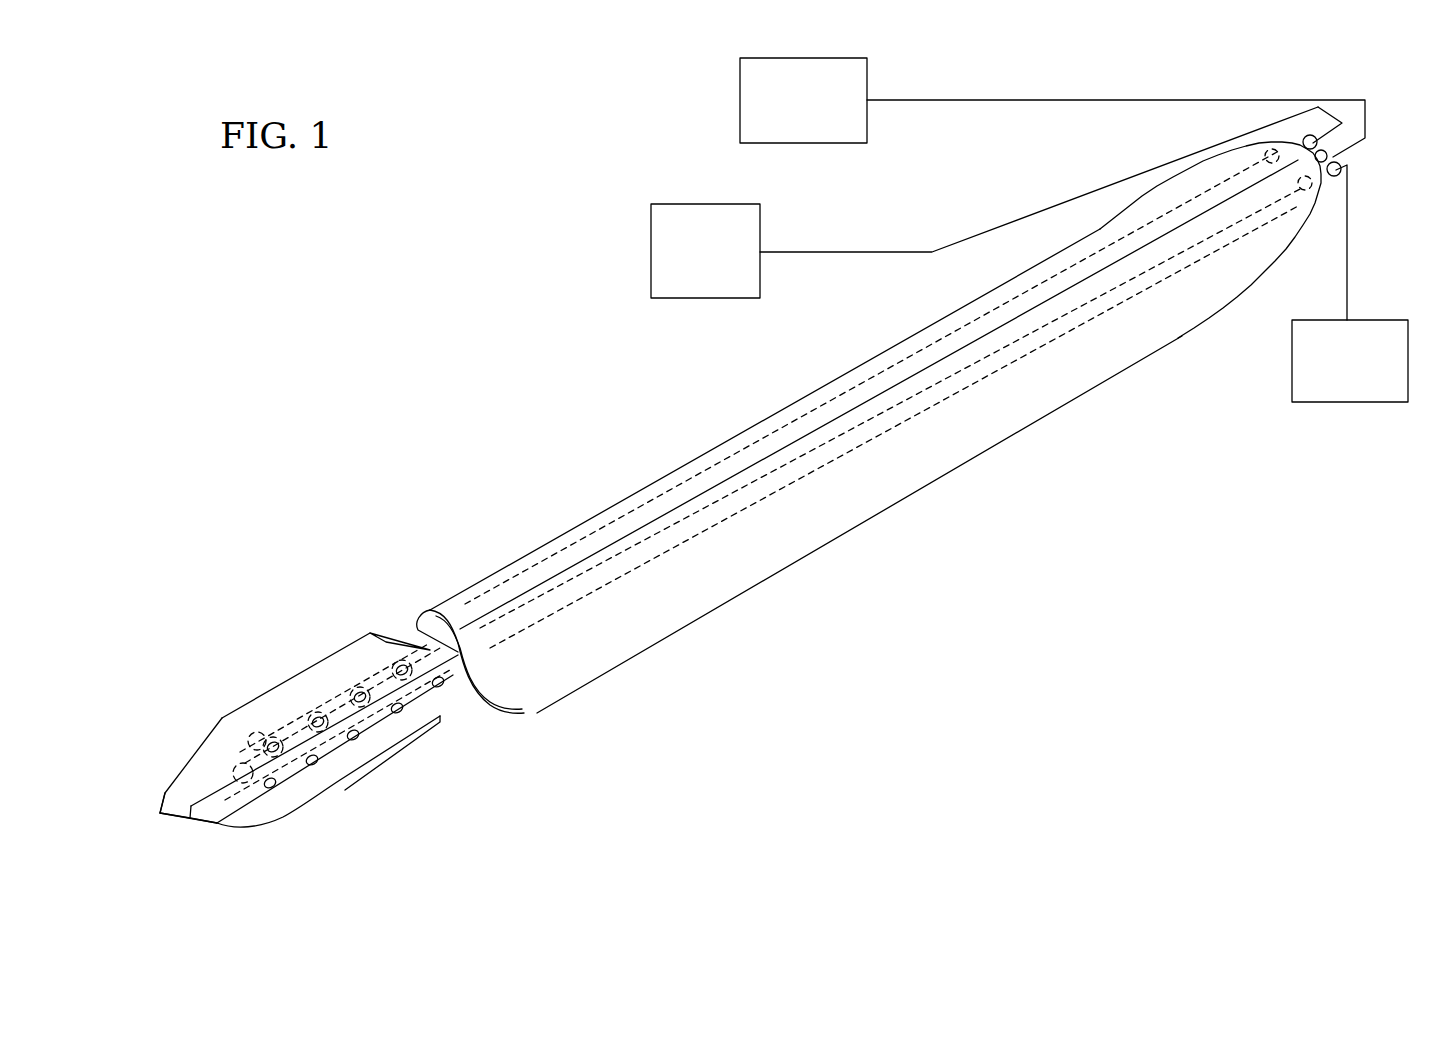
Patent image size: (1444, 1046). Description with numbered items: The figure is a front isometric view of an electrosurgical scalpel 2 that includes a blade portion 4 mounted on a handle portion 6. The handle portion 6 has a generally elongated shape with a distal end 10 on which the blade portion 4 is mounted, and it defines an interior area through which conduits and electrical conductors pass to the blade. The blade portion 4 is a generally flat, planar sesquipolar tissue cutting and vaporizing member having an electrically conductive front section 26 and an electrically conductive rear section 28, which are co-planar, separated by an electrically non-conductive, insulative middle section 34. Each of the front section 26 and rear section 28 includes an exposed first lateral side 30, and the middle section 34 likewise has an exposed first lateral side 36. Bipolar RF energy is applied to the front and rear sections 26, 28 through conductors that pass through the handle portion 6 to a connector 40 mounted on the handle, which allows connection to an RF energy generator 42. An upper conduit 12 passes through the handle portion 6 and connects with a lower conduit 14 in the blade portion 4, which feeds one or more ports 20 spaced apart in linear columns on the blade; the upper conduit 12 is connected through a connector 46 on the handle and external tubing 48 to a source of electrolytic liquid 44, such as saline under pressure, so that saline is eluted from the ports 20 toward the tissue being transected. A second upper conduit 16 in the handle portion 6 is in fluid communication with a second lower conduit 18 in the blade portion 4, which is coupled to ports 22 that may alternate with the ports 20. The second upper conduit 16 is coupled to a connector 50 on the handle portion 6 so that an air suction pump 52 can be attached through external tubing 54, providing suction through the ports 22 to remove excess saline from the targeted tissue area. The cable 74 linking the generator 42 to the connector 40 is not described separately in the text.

The electrosurgical scalpel 2 is at (1112, 695).
The blade portion 4 is at (222, 580).
The handle portion 6 is at (790, 406).
The distal end 10 is at (525, 733).
The upper conduit 12 is at (737, 515).
The lower conduit 14 is at (402, 738).
The upper conduit 16 is at (622, 522).
The lower conduit 18 is at (332, 683).
The ports 20 is at (330, 767).
The ports 22 is at (360, 690).
The front section 26 is at (342, 768).
The rear section 28 is at (276, 742).
The first lateral side 30 is at (300, 797).
The insulative middle section 34 is at (205, 823).
The first lateral side 36 is at (232, 803).
The connector 40 is at (1335, 156).
The RF energy generator 42 is at (740, 72).
The source of electrolytic liquid 44 is at (1347, 402).
The connector 46 is at (1340, 174).
The external tubing 48 is at (1347, 270).
The connector 50 is at (1310, 142).
The air suction pump 52 is at (685, 204).
The external tubing 54 is at (988, 232).
The RF cable 74 is at (1020, 100).